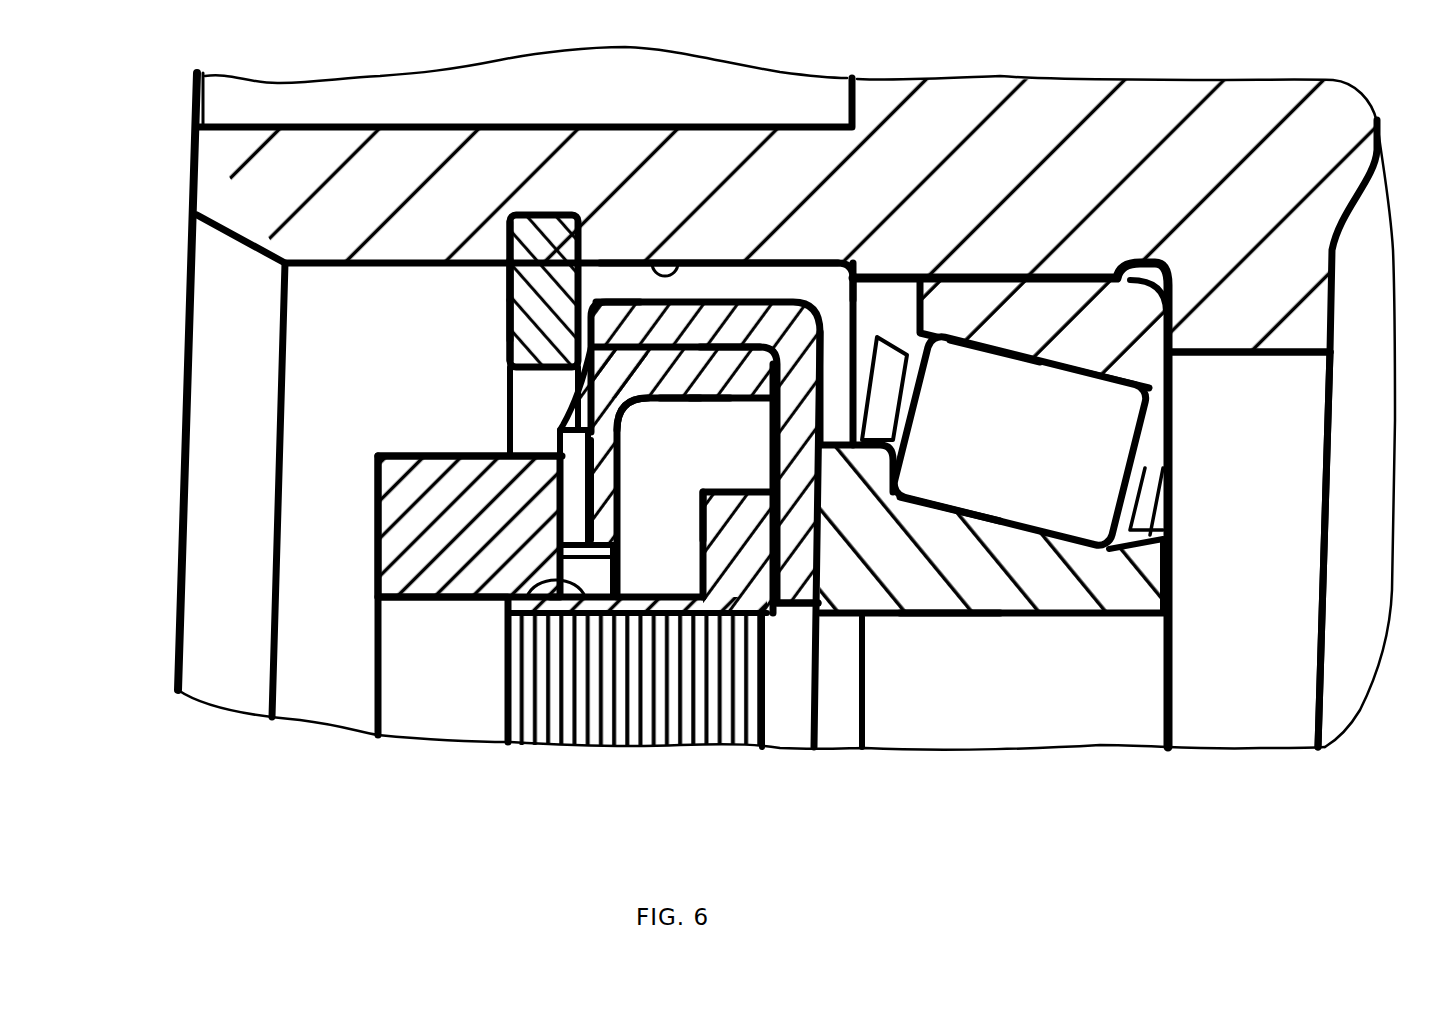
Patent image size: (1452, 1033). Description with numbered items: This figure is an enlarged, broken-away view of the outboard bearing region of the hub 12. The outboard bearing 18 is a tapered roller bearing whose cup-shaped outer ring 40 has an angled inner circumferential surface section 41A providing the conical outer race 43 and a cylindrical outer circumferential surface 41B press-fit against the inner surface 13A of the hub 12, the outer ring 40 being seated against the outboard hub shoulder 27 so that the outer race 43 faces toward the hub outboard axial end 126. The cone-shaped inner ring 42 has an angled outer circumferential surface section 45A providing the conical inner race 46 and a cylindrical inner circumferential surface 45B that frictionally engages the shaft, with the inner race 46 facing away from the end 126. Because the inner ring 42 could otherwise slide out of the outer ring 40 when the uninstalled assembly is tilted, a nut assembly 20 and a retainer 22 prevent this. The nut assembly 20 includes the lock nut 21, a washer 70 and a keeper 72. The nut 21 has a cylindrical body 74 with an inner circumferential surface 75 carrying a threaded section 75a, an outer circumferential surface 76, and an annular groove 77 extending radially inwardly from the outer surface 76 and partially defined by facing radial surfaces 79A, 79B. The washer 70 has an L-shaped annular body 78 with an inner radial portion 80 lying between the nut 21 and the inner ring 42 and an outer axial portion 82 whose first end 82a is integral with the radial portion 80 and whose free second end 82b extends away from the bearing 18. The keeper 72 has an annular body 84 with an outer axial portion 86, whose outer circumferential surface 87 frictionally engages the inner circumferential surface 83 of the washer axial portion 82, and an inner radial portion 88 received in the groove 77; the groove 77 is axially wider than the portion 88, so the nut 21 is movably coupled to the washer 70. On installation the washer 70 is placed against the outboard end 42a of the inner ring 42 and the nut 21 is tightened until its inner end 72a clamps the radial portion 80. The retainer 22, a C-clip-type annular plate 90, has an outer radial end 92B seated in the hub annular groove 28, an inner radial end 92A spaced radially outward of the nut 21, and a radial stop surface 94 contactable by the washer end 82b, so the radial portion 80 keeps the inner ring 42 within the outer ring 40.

The hub 12 is at (1072, 76).
The hub outboard axial end 126 is at (215, 168).
The inner surface of the hub 13A is at (655, 260).
The washer 70 is at (739, 256).
The outboard hub shoulder 27 is at (1310, 322).
The outboard bearing 18 is at (1209, 450).
The nut assembly 20 is at (360, 383).
The lock nut 21 is at (370, 496).
The inner radial end 92A is at (508, 350).
The outer radial end 92B is at (553, 214).
The radial stop surface 94 is at (508, 318).
The annular plate 90 is at (506, 278).
The hub annular groove 28 is at (503, 235).
The retainer 22 is at (443, 306).
The cylindrical body 74 is at (390, 555).
The outer circumferential surface 76 is at (410, 453).
The inner circumferential surface 75 is at (426, 603).
The threaded section 75a is at (580, 728).
The annular groove 77 is at (500, 614).
The outer axial portion 82 is at (704, 316).
The free second end 82b is at (610, 316).
The first end 82a is at (856, 266).
The L-shaped annular body 78 is at (777, 286).
The keeper 72 is at (550, 396).
The nut body inner end 72a is at (806, 523).
The inner radial portion 88 is at (600, 490).
The annular body 84 is at (641, 414).
The outer axial portion 86 is at (707, 388).
The outer circumferential surface 87 is at (678, 400).
The inner circumferential surface 83 is at (723, 373).
The radial surface 79B is at (690, 513).
The radial surface 79A is at (617, 551).
The inner radial portion 80 is at (840, 547).
The outboard end 42a is at (785, 616).
The inner ring 42 is at (1023, 624).
The cylindrical inner circumferential surface 45B is at (940, 625).
The cylindrical outer circumferential surface 41B is at (988, 273).
The outer ring 40 is at (1040, 273).
The angled inner circumferential surface section 41A is at (1067, 372).
The conical outer race 43 is at (1010, 362).
The angled outer circumferential surface section 45A is at (976, 516).
The conical inner race 46 is at (1034, 518).